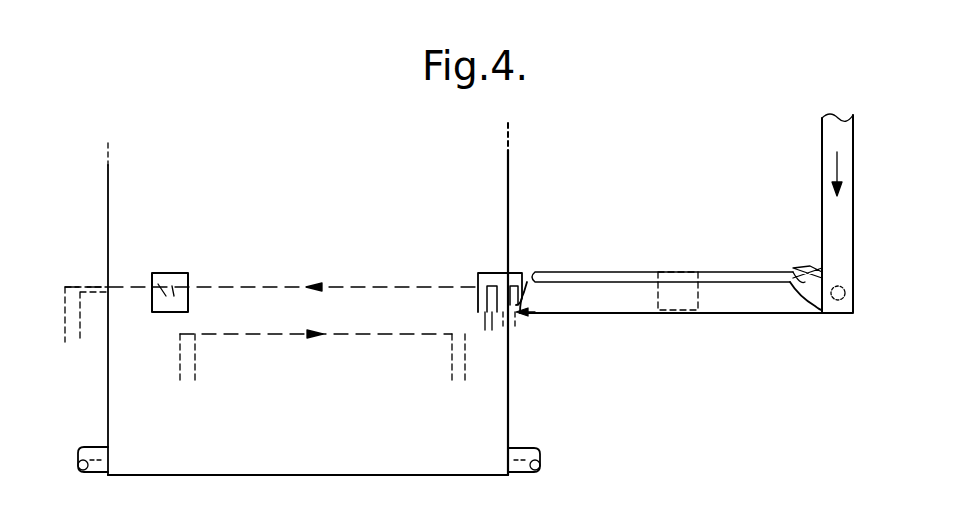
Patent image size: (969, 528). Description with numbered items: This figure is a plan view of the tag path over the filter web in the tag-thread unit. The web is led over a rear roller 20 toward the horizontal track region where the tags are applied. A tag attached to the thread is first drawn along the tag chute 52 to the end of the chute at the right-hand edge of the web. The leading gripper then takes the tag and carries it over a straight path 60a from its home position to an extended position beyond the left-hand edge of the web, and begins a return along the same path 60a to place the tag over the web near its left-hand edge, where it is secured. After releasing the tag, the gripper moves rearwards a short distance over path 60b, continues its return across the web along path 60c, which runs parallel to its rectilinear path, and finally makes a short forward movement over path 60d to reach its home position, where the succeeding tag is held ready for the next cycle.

The rear roller 20 is at (540, 448).
The tag chute 52 is at (602, 272).
The straight path 60a is at (343, 287).
The rearward path 60b is at (178, 335).
The return path 60c is at (283, 334).
The forward path 60d is at (480, 313).